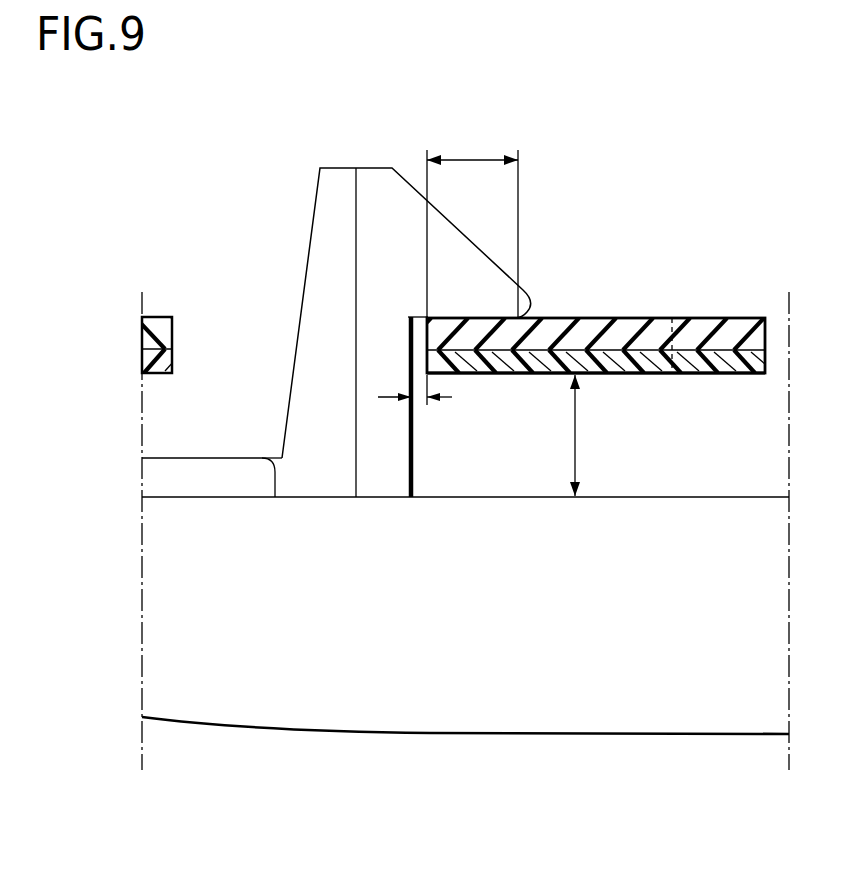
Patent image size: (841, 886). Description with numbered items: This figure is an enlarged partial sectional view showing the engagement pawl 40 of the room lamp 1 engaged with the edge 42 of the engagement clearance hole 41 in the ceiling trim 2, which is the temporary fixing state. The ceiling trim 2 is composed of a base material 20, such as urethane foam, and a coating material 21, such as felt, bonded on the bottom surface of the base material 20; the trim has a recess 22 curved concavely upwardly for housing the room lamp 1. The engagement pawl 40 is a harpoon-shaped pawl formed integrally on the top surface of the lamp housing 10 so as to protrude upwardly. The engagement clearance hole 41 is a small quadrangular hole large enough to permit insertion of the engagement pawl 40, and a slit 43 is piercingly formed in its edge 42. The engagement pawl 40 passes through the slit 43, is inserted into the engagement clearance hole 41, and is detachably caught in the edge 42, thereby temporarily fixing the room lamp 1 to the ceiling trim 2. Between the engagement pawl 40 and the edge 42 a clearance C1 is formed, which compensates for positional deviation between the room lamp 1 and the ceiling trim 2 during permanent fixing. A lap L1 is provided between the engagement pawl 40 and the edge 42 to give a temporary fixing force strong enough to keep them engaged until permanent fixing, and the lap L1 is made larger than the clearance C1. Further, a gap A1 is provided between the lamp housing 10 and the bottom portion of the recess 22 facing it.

The room lamp 1 is at (678, 490).
The ceiling trim 2 is at (591, 324).
The lamp housing 10 is at (219, 458).
The base material 20 is at (738, 328).
The coating material 21 is at (773, 360).
The recess 22 is at (718, 376).
The engagement pawl 40 is at (344, 168).
The engagement clearance hole 41 is at (207, 322).
The edge of engagement clearance hole 42 is at (425, 347).
The slit 43 is at (672, 318).
The lap L1 is at (472, 220).
The clearance C1 is at (416, 422).
The gap A1 is at (573, 435).